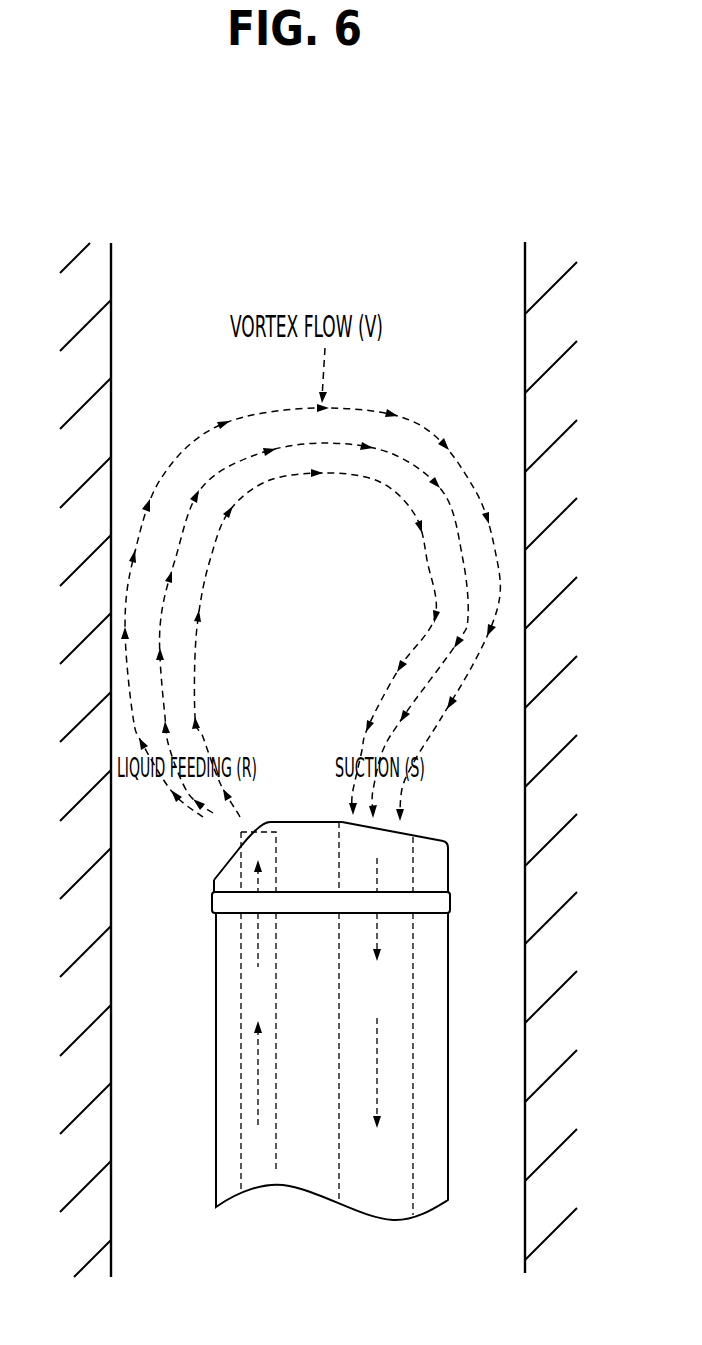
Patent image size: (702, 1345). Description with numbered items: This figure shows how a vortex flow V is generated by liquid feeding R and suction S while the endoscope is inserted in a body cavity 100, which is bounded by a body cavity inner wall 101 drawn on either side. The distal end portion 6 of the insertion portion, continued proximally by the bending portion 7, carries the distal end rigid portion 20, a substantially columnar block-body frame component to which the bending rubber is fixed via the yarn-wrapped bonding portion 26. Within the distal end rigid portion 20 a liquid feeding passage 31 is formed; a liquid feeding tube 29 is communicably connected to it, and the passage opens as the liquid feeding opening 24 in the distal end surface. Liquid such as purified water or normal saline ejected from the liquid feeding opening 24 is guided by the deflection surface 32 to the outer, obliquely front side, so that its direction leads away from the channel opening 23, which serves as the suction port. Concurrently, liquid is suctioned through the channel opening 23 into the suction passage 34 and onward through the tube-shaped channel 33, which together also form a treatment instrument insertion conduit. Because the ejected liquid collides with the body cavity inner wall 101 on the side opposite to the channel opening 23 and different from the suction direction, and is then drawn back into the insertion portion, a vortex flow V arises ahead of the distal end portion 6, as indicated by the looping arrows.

The body cavity 100 is at (184, 282).
The body cavity inner wall 101 is at (111, 378).
The distal end portion 6 is at (460, 843).
The bending portion 7 is at (452, 1090).
The distal end rigid portion 20 is at (450, 869).
The channel opening 23 is at (413, 835).
The liquid feeding opening 24 is at (240, 848).
The yarn-wrapped bonding portion 26 is at (452, 904).
The liquid feeding tube 29 is at (240, 988).
The liquid feeding passage 31 is at (232, 878).
The deflection surface 32 is at (272, 830).
The channel 33 is at (413, 1008).
The suction passage 34 is at (412, 857).